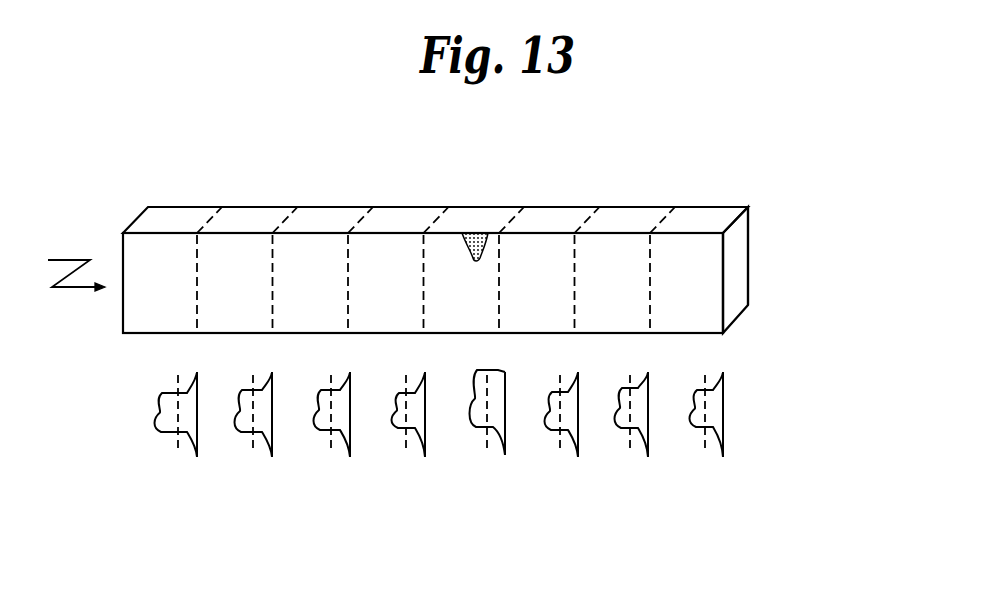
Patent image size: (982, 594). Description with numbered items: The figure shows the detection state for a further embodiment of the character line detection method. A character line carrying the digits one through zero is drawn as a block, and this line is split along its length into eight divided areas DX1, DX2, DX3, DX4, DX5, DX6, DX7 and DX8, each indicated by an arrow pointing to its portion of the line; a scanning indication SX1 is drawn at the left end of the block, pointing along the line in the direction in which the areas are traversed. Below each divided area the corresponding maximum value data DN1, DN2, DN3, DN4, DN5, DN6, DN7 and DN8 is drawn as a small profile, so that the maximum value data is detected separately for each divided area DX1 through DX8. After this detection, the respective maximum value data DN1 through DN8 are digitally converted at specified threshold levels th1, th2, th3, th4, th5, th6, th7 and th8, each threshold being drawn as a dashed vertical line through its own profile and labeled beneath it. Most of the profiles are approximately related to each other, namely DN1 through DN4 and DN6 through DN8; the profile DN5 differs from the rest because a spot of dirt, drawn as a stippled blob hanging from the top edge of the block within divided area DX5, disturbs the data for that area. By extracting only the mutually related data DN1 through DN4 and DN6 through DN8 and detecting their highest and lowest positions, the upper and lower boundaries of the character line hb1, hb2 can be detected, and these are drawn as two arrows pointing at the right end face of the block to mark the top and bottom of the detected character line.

The divided area DX1 is at (171, 222).
The divided area DX2 is at (246, 222).
The divided area DX3 is at (322, 222).
The divided area DX4 is at (398, 222).
The divided area DX5 is at (473, 222).
The divided area DX6 is at (548, 222).
The divided area DX7 is at (624, 222).
The divided area DX8 is at (700, 222).
The scanning direction SX1 is at (75, 260).
The character line upper position hb1 is at (729, 253).
The character line lower position hb2 is at (729, 295).
The maximum value data DN1 is at (164, 400).
The maximum value data DN2 is at (240, 400).
The maximum value data DN3 is at (317, 400).
The maximum value data DN4 is at (392, 400).
The maximum value data DN5 is at (472, 399).
The maximum value data DN6 is at (546, 400).
The maximum value data DN7 is at (616, 400).
The maximum value data DN8 is at (691, 400).
The threshold level th1 is at (179, 435).
The threshold level th2 is at (254, 435).
The threshold level th3 is at (332, 435).
The threshold level th4 is at (407, 435).
The threshold level th5 is at (488, 435).
The threshold level th6 is at (561, 435).
The threshold level th7 is at (631, 435).
The threshold level th8 is at (706, 435).